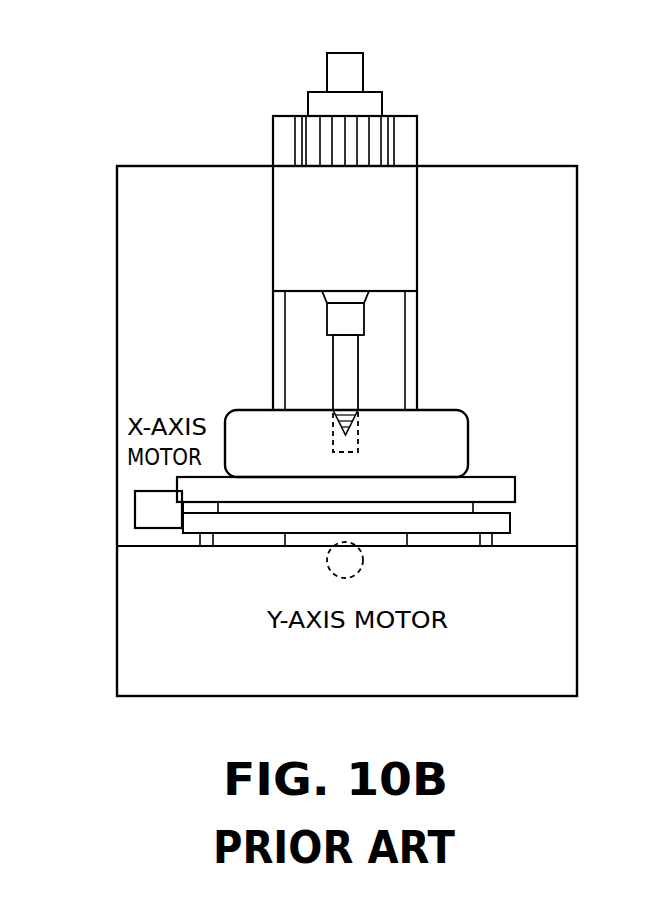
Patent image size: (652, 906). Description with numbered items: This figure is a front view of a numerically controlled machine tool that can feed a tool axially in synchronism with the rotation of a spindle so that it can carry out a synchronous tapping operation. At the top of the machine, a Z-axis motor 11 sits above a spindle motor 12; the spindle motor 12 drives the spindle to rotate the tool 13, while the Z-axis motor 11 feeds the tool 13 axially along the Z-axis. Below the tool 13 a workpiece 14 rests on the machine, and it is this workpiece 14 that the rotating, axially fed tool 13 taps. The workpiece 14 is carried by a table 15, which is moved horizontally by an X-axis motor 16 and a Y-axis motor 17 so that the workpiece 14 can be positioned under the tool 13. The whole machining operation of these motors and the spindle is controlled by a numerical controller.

The Z-axis motor 11 is at (363, 75).
The spindle motor 12 is at (418, 220).
The tool 13 is at (358, 372).
The workpiece 14 is at (468, 438).
The table 15 is at (515, 487).
The X-axis motor 16 is at (135, 510).
The Y-axis motor 17 is at (363, 558).